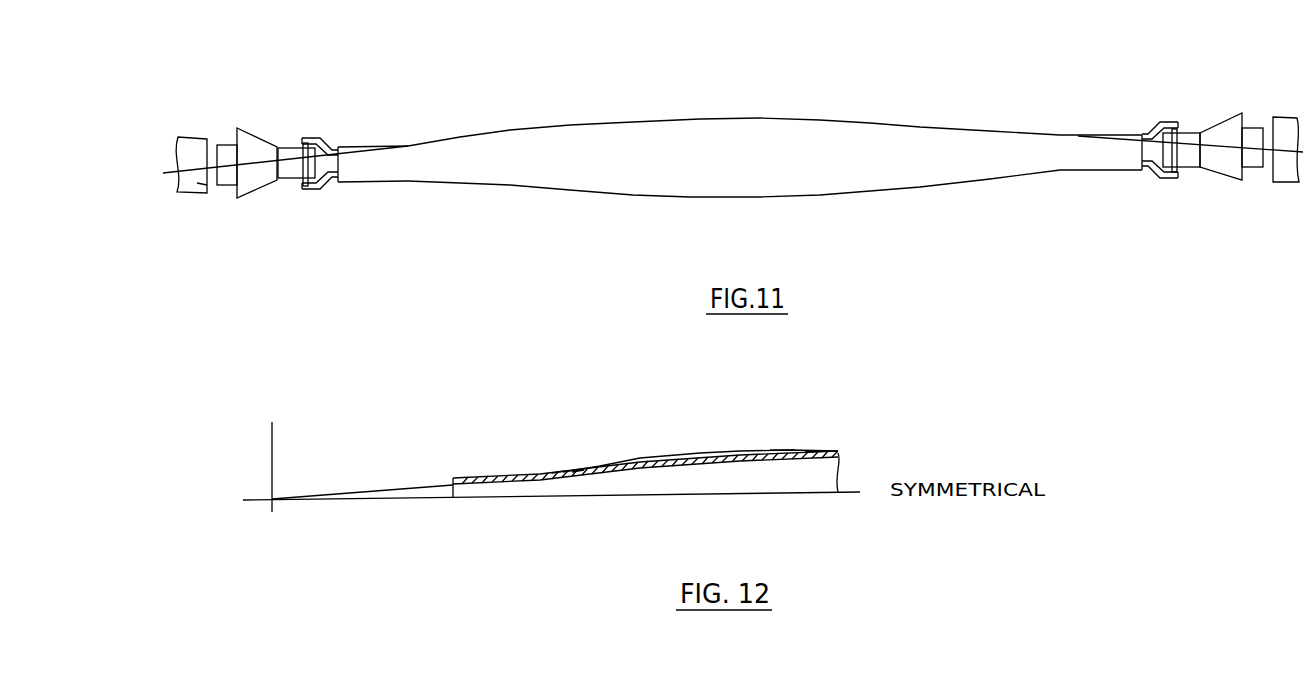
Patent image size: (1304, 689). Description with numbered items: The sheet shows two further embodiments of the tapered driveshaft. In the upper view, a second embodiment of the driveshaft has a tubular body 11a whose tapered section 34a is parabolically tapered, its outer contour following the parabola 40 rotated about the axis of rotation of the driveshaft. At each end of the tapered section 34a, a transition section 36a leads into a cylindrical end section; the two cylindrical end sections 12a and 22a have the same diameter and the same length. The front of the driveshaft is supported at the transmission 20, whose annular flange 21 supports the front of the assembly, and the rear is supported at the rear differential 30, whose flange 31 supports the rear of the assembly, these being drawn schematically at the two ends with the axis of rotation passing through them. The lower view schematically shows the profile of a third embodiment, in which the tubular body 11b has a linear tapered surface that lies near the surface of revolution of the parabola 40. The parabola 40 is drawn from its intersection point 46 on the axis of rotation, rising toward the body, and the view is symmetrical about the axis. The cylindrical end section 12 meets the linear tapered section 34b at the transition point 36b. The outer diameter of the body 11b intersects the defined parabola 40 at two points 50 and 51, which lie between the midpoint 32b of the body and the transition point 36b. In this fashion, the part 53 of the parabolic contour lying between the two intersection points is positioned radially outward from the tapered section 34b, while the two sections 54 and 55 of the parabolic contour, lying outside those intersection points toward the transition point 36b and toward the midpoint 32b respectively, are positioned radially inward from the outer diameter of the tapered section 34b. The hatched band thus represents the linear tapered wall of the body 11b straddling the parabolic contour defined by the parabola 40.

In FIG. 11, the tubular body 11a is at (740, 124).
In FIG. 12, the tubular body 11b is at (700, 442).
In FIG. 12, the front end 12 is at (457, 477).
In FIG. 11, the cylindrical end section 12a is at (350, 145).
In FIG. 11, the transmission 20 is at (189, 131).
In FIG. 11, the annular flange 21 is at (197, 183).
In FIG. 11, the cylindrical end section 22a is at (1117, 133).
In FIG. 11, the rear differential 30 is at (1285, 122).
In FIG. 11, the flange 31 is at (1258, 127).
In FIG. 12, the midpoint 32b is at (838, 454).
In FIG. 11, the tapered section 34a is at (518, 129).
In FIG. 12, the tapered section 34b is at (645, 506).
In FIG. 11, the transition section 36a is at (408, 145).
In FIG. 12, the transition point 36b is at (532, 473).
In FIG. 11, the parabola 40 is at (227, 162).
In FIG. 12, the parabola 40 is at (373, 492).
In FIG. 12, the intersection point 46 is at (272, 499).
In FIG. 12, the intersection point 50 is at (577, 472).
In FIG. 12, the intersection point 51 is at (794, 421).
In FIG. 12, the parabolic contour part 53 is at (711, 457).
In FIG. 12, the parabolic contour section 54 is at (558, 471).
In FIG. 12, the parabolic contour section 55 is at (810, 452).